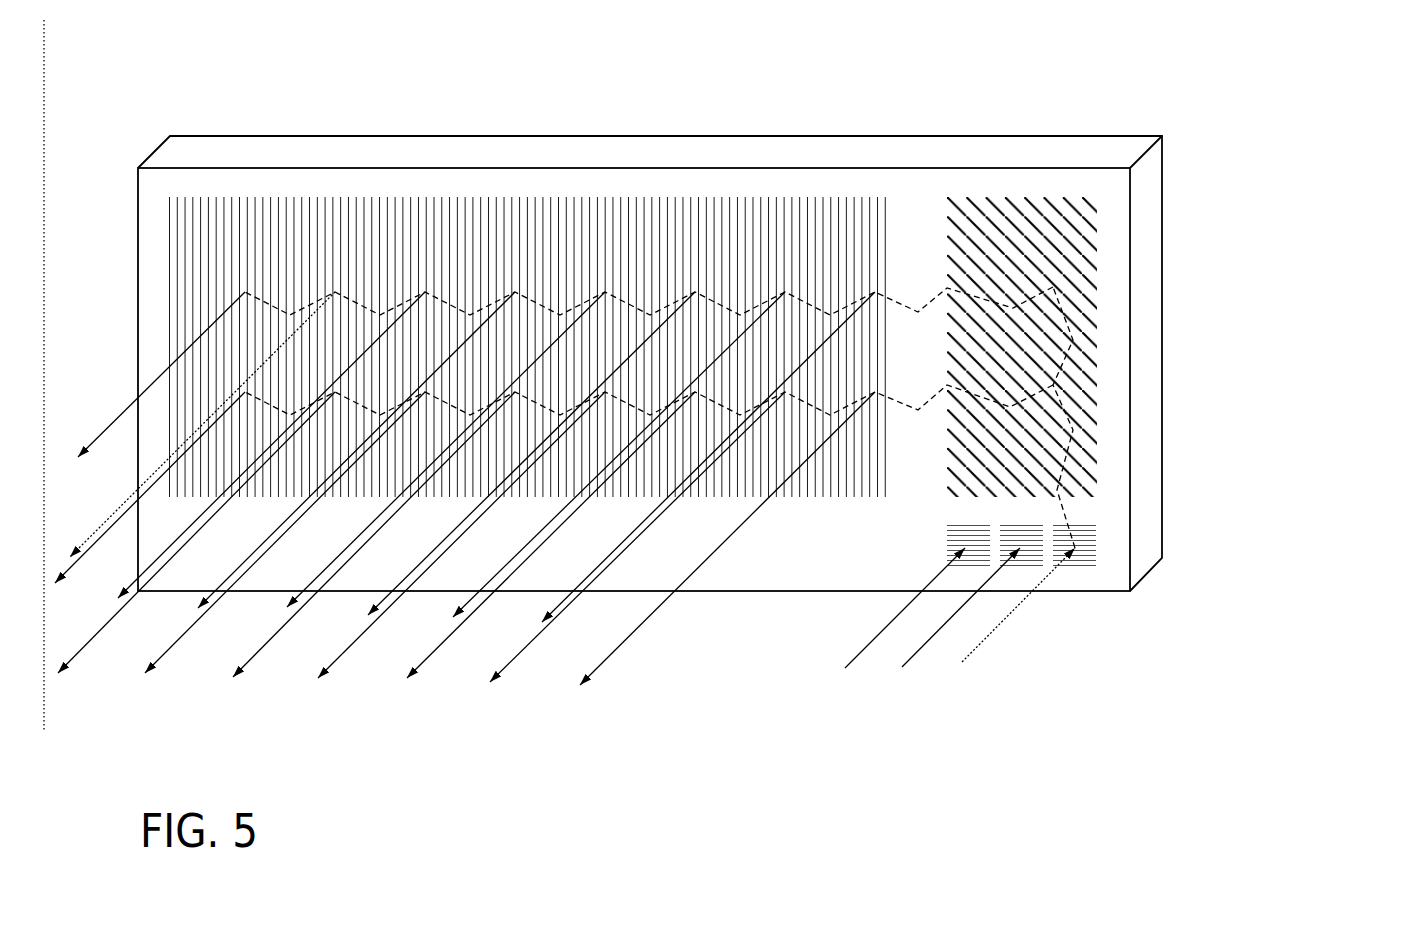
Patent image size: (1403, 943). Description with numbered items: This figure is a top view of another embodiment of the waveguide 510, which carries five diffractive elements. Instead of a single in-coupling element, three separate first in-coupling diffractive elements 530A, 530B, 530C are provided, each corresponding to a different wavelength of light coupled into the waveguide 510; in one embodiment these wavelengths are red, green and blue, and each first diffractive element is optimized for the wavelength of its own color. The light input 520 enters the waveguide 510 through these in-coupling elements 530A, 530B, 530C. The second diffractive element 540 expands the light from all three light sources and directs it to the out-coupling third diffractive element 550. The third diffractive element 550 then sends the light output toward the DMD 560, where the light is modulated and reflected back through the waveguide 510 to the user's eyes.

The waveguide 510 is at (1170, 137).
The light input 520 is at (1017, 640).
The first in-coupling diffractive element 530A is at (988, 515).
The first in-coupling diffractive element 530B is at (1035, 520).
The first in-coupling diffractive element 530C is at (1102, 518).
The second diffractive element 540 is at (1114, 236).
The third diffractive element 550 is at (788, 178).
The light output toward DMD 560 is at (642, 665).